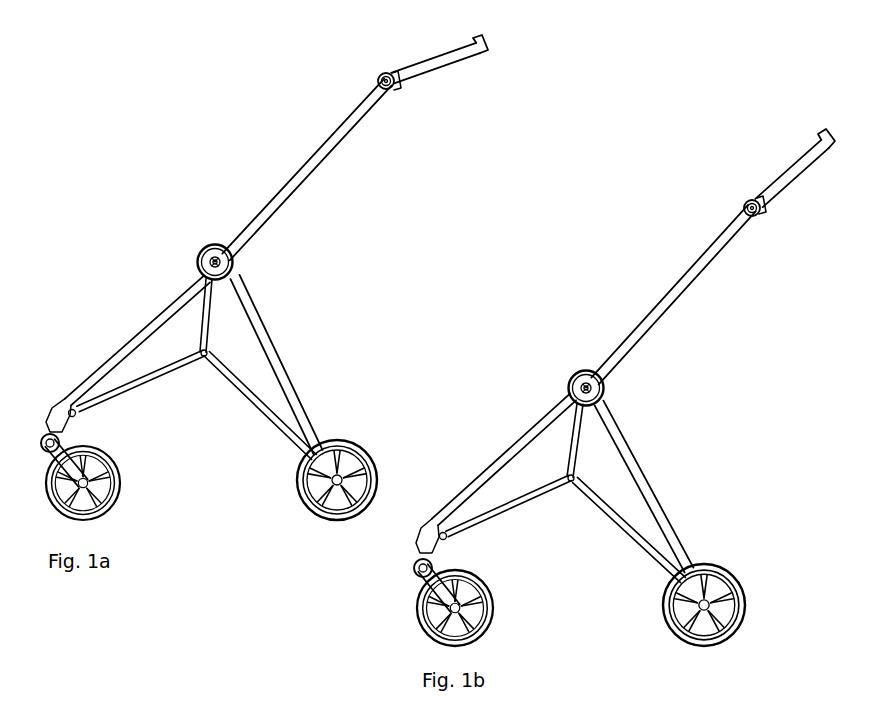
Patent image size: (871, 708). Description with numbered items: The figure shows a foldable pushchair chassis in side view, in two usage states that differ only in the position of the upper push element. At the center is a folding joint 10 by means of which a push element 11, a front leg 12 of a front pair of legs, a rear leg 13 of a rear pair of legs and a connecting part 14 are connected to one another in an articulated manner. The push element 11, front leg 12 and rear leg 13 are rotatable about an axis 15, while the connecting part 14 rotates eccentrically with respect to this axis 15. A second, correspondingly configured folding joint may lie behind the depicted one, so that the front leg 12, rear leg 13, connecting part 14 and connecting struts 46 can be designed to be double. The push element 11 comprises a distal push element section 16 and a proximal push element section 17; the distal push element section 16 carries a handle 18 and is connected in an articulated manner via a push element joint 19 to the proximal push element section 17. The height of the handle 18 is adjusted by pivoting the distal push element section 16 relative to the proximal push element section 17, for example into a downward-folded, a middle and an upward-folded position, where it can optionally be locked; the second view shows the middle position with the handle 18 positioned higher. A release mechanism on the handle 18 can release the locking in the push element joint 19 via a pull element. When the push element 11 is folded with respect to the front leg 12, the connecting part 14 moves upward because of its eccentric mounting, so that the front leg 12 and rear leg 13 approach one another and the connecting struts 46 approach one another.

The folding joint 10 is at (208, 248).
The push element 11 is at (300, 173).
The front leg 12 is at (143, 313).
The rear leg 13 is at (273, 342).
The connecting part 14 is at (180, 283).
The axis 15 is at (222, 264).
The distal push element section 16 is at (437, 63).
The proximal push element section 17 is at (265, 212).
The handle 18 is at (487, 50).
The push element joint 19 is at (400, 97).
The connecting struts 46 is at (127, 390).